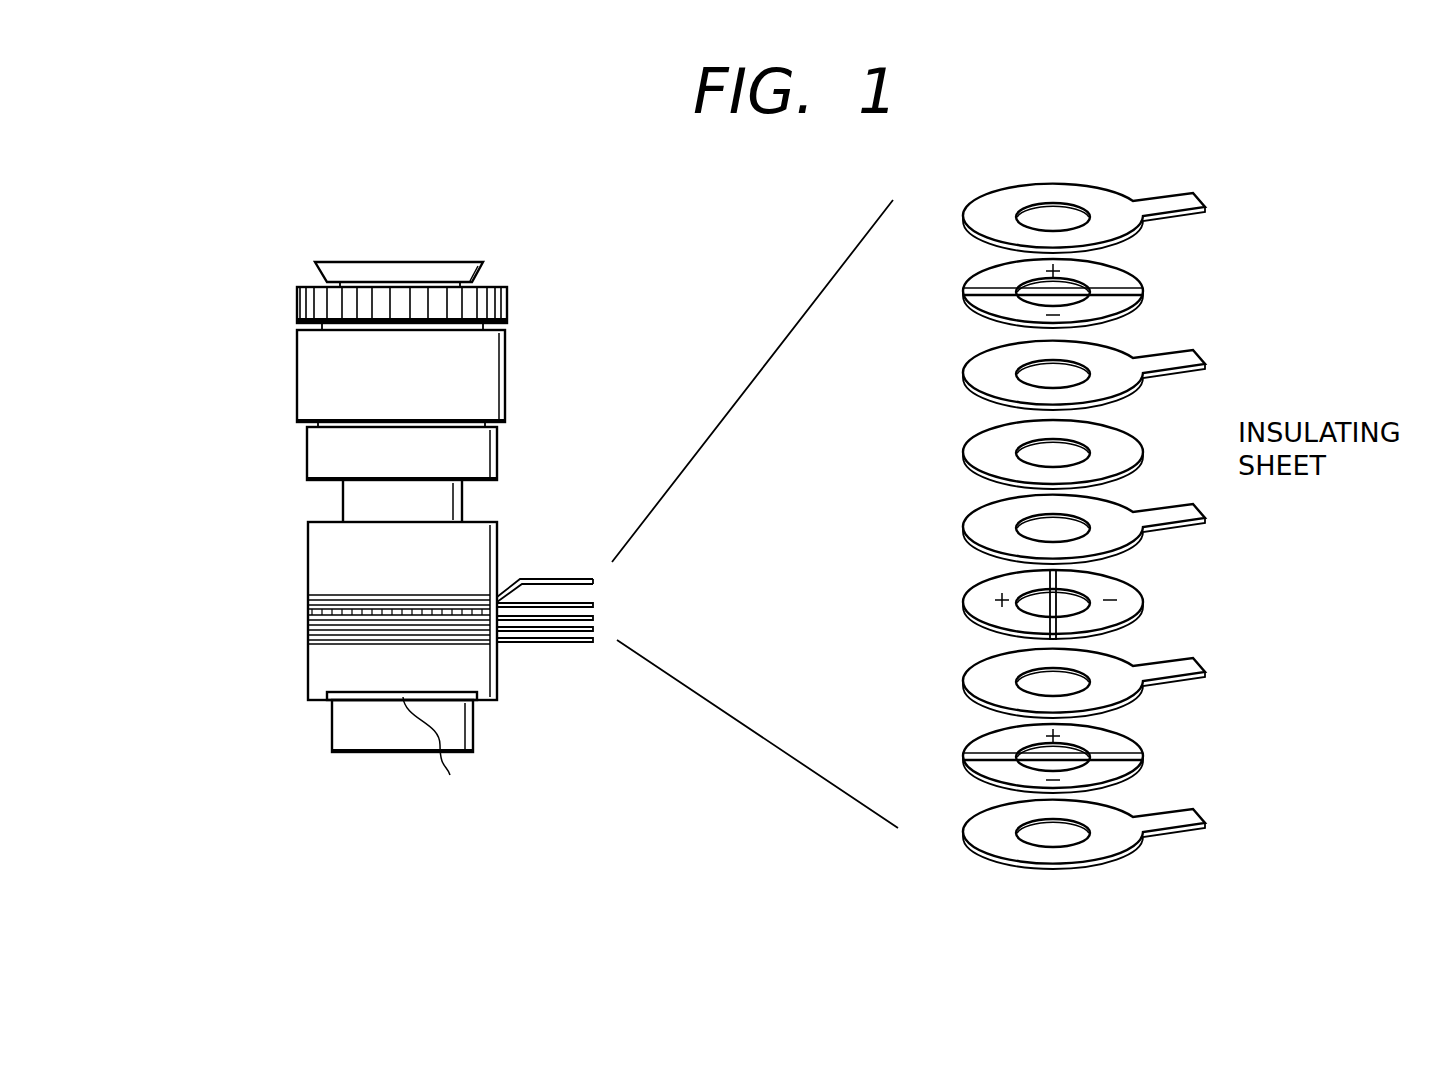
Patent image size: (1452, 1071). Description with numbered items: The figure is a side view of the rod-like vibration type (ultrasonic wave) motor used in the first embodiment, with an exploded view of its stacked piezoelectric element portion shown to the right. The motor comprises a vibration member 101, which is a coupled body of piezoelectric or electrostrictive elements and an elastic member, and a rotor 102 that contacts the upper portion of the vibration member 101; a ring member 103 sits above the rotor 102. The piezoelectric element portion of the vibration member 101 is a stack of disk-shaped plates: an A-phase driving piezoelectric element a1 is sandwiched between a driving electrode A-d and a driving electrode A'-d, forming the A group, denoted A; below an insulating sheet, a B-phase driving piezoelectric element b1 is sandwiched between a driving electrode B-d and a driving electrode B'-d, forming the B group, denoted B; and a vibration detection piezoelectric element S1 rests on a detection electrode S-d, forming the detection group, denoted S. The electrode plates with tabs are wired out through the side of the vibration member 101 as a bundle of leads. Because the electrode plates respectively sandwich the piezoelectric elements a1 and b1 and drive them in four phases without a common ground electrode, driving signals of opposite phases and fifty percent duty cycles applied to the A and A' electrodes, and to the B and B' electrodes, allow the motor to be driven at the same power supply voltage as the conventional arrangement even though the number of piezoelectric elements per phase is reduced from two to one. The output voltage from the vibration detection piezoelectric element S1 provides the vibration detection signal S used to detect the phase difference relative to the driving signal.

The vibration member 101 is at (203, 745).
The rotor 102 is at (220, 325).
The knurled ring 103 is at (297, 297).
The A-phase driving electrode A-d is at (1138, 216).
The A-phase driving piezoelectric element a1 is at (1027, 293).
The A'-phase driving electrode A'-d is at (1141, 372).
The A phase A is at (1179, 295).
The B-phase driving electrode B-d is at (1138, 529).
The B-phase driving piezoelectric element b1 is at (1027, 604).
The B'-phase driving electrode B'-d is at (1141, 681).
The B phase B is at (1179, 606).
The vibration detection piezoelectric element S1 is at (1027, 758).
The vibration detection electrode S-d is at (1137, 834).
The vibration detection signal S is at (1178, 796).